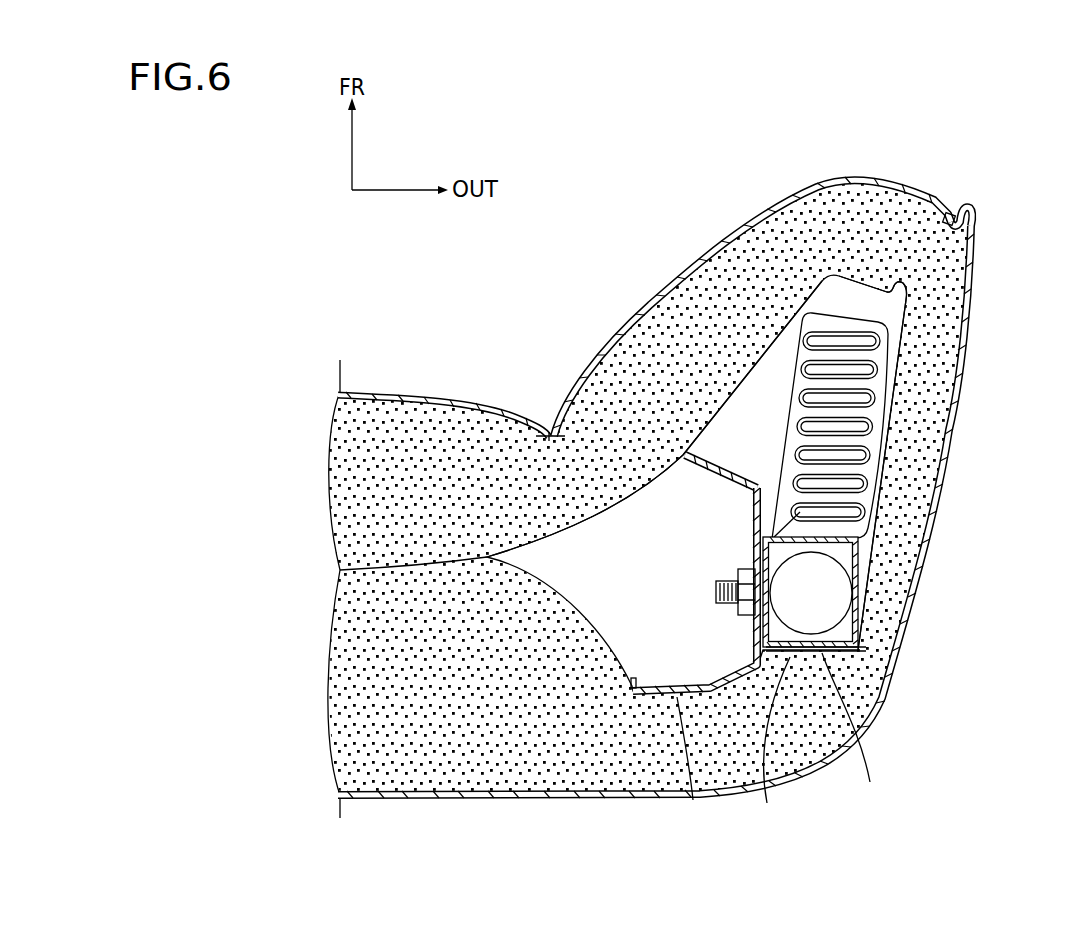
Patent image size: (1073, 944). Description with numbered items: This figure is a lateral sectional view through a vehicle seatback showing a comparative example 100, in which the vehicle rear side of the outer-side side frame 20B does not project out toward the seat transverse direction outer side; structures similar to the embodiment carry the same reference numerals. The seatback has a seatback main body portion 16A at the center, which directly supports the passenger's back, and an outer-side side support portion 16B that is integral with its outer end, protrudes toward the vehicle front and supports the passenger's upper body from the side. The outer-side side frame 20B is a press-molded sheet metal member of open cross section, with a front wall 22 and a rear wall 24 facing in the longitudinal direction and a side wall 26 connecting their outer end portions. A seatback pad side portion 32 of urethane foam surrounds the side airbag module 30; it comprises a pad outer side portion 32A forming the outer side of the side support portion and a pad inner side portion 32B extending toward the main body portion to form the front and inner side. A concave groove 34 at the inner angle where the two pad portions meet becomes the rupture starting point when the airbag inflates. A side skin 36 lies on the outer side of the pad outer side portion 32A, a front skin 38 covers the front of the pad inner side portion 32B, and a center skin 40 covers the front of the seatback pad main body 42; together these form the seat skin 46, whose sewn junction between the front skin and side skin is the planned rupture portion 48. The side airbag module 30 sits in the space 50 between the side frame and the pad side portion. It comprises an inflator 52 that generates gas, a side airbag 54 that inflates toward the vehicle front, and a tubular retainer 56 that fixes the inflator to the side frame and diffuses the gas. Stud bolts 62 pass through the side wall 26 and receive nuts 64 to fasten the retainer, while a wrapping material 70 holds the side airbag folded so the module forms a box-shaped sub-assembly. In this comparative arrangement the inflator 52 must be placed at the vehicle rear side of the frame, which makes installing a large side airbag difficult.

The comparative example 100 is at (663, 120).
The seatback main body portion 16A is at (505, 536).
The outer-side side support portion 16B is at (764, 374).
The outer-side side frame 20B is at (689, 574).
The front wall 22 is at (682, 468).
The rear wall 24 is at (693, 800).
The side wall 26 is at (767, 803).
The side airbag module 30 is at (870, 782).
The seatback pad side portion 32 is at (803, 225).
The pad outer side portion 32A is at (912, 422).
The pad inner side portion 32B is at (712, 290).
The concave groove 34 is at (905, 294).
The side skin 36 is at (945, 488).
The front skin 38 is at (742, 210).
The center skin 40 is at (445, 395).
The seatback pad main body 42 is at (487, 428).
The seat skin 46 is at (581, 352).
The planned rupture portion 48 is at (956, 186).
The space 50 is at (813, 497).
The inflator 52 is at (868, 630).
The side airbag 54 is at (878, 392).
The tubular retainer 56 is at (857, 651).
The stud bolt 62 is at (716, 588).
The nut 64 is at (733, 613).
The wrapping material 70 is at (895, 327).